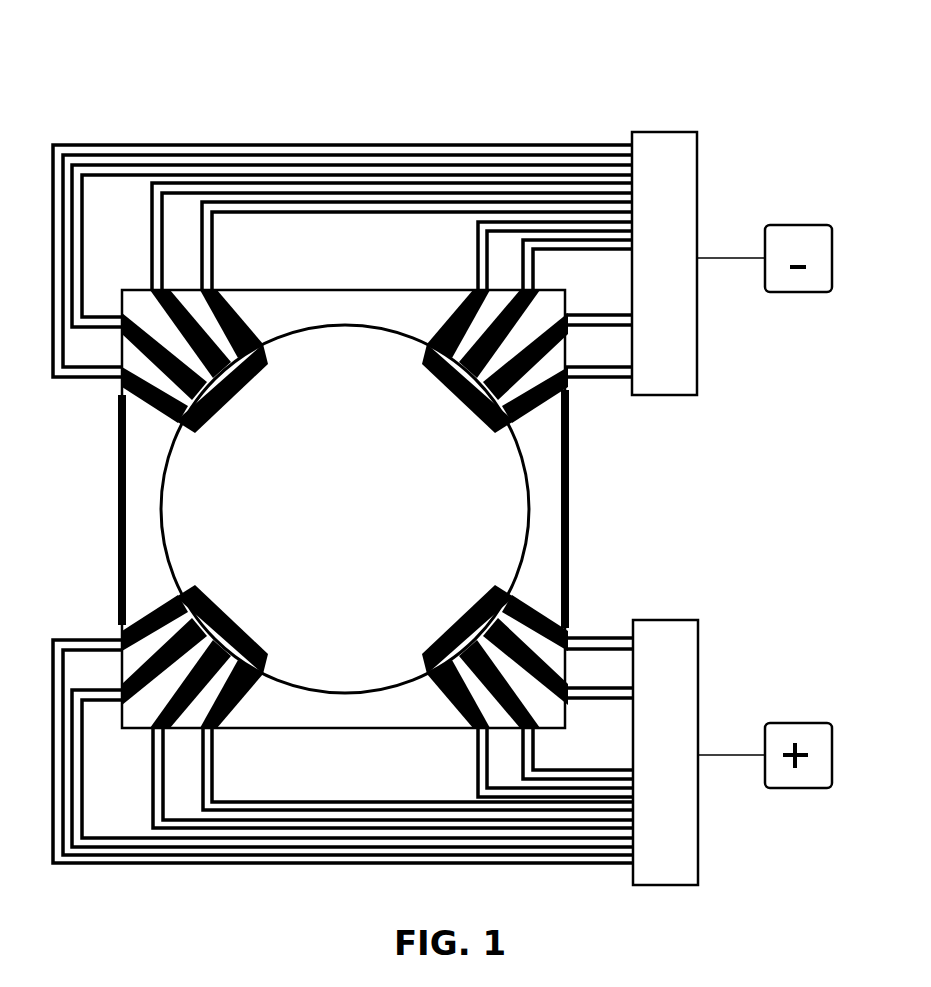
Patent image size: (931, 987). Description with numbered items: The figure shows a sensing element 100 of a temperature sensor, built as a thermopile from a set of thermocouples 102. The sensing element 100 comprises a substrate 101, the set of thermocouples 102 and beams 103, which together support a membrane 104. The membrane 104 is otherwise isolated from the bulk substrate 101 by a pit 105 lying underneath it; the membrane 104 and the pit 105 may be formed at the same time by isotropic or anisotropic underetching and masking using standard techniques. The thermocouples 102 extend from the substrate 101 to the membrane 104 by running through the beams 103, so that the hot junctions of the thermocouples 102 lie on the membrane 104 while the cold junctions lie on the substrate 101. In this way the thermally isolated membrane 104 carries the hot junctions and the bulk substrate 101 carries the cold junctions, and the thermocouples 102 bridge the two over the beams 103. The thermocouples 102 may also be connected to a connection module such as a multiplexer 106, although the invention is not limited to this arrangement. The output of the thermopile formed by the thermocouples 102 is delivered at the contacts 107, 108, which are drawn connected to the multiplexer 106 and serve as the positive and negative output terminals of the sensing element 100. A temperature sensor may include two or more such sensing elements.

The sensing element 100 is at (203, 98).
The substrate 101 is at (796, 497).
The thermocouples 102 is at (343, 486).
The beams 103 is at (240, 317).
The membrane 104 is at (345, 509).
The pit 105 is at (110, 527).
The multiplexer 106 is at (698, 508).
The contact 107 is at (801, 740).
The contact 108 is at (801, 276).